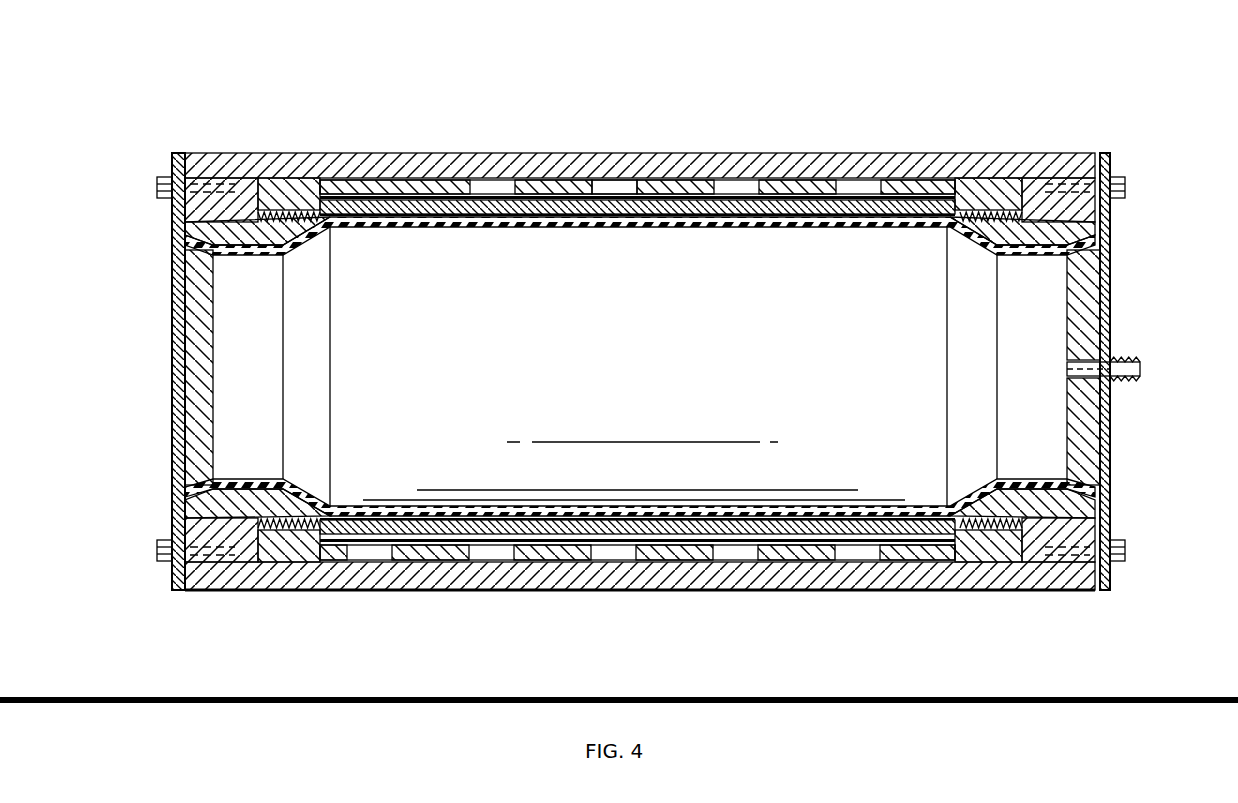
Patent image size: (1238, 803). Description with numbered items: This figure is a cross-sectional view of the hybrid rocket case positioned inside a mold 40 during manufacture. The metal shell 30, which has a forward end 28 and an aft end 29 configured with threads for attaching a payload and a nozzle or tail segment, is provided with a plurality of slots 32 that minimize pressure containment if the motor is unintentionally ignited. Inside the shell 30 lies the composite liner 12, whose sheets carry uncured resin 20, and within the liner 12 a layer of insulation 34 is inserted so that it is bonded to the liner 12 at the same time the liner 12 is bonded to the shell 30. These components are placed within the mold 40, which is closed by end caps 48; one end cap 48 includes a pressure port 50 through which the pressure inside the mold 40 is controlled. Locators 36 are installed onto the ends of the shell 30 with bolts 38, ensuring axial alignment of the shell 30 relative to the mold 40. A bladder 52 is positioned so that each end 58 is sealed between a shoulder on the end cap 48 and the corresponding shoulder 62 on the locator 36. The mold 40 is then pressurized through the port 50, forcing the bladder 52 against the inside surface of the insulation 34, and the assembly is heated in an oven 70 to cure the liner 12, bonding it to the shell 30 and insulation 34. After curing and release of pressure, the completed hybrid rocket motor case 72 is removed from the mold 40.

The liner 12 is at (600, 186).
The uncured resin 20 is at (838, 207).
The forward end 28 is at (985, 185).
The aft end 29 is at (300, 180).
The metal shell 30 is at (468, 180).
The slots 32 is at (490, 560).
The layer of insulation 34 is at (748, 197).
The locator 36 is at (183, 232).
The bolts 38 is at (157, 185).
The mold 40 is at (653, 172).
The end caps 48 is at (172, 290).
The pressure port 50 is at (1140, 372).
The bladder 52 is at (878, 228).
The end of bladder 58 is at (185, 250).
The shoulder 62 is at (260, 256).
The oven 70 is at (778, 677).
The composite/metal hybrid rocket motor case 72 is at (478, 334).